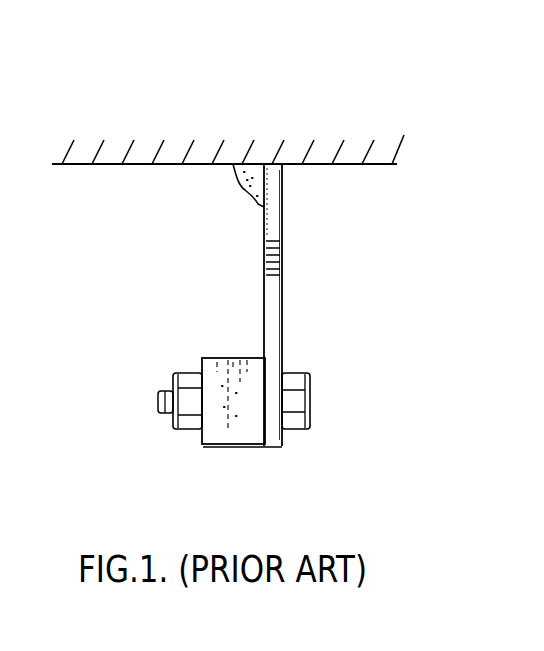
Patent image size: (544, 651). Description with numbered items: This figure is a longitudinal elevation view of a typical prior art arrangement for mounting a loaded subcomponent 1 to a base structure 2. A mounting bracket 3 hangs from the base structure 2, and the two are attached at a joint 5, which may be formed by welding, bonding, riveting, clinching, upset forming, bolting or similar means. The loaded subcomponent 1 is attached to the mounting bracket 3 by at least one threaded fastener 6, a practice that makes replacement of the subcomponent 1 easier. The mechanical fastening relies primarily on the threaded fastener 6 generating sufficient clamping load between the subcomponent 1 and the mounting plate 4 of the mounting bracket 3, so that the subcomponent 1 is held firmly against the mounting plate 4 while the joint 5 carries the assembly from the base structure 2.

The loaded subcomponent 1 is at (214, 392).
The base structure 2 is at (382, 142).
The mounting bracket 3 is at (288, 287).
The mounting plate 4 is at (254, 350).
The joint 5 is at (237, 192).
The threaded fastener 6 is at (163, 421).